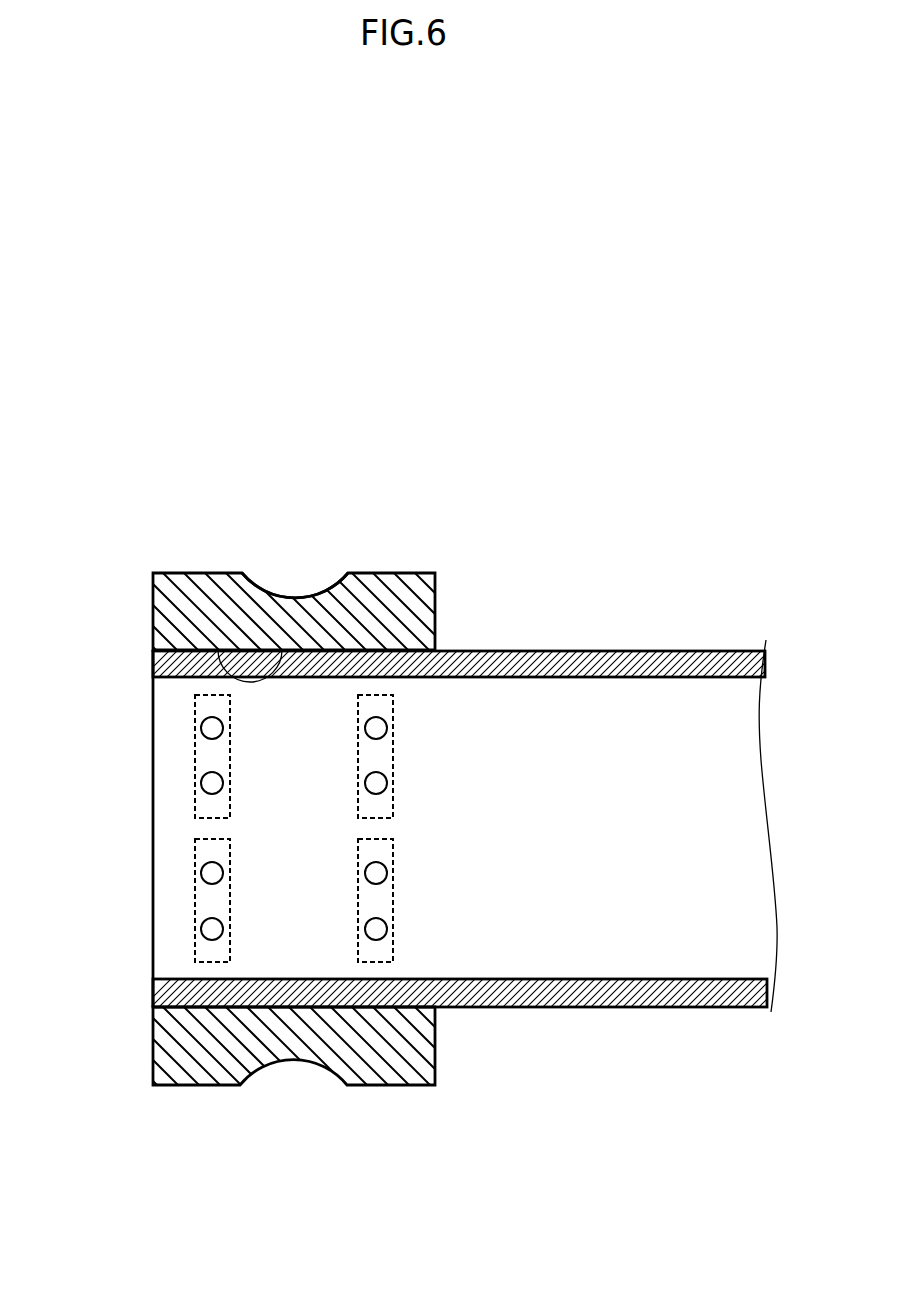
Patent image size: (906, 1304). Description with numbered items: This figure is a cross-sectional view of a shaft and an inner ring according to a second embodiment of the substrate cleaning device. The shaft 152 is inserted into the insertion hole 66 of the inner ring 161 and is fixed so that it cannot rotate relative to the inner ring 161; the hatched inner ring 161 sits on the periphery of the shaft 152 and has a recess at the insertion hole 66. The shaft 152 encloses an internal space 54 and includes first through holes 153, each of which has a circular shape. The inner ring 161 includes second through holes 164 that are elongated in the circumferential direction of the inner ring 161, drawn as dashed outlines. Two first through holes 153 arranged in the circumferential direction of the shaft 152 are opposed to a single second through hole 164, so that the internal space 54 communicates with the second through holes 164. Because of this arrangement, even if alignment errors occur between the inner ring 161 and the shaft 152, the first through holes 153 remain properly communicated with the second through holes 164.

The internal space 54 is at (667, 978).
The insertion hole 66 is at (278, 670).
The shaft 152 is at (672, 665).
The first through holes 153 is at (212, 785).
The inner ring 161 is at (400, 598).
The second through holes 164 is at (198, 812).